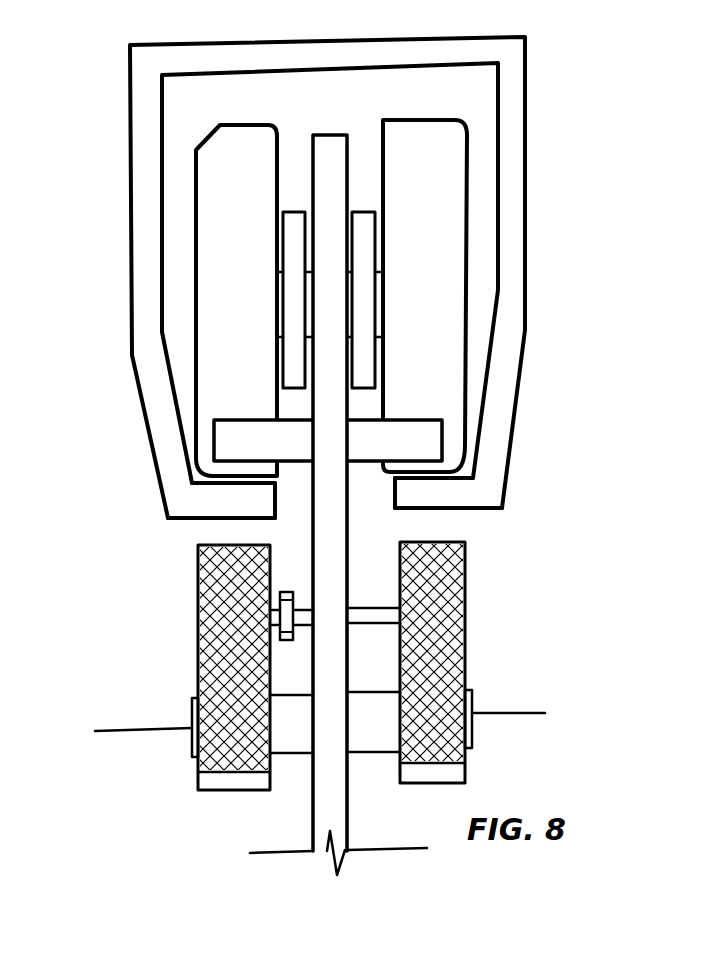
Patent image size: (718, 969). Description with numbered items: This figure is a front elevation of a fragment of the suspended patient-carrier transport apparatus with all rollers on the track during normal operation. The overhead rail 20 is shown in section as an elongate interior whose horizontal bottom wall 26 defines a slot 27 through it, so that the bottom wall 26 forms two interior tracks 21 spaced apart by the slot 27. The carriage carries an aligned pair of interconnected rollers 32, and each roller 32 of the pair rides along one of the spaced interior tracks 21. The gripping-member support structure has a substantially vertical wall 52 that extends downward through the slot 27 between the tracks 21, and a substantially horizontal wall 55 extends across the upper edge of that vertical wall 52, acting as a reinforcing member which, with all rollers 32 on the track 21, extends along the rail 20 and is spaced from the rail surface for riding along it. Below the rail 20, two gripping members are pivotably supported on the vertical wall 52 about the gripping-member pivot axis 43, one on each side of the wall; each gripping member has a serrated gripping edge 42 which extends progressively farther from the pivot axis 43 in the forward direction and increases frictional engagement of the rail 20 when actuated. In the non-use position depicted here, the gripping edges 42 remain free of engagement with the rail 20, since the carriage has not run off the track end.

The overhead rail 20 is at (513, 88).
The rollers 32 is at (445, 197).
The horizontal wall 55 is at (395, 433).
The horizontal track 21 is at (240, 473).
The horizontal bottom wall 26 is at (452, 492).
The slot 27 is at (360, 498).
The vertical wall 52 is at (327, 547).
The serrated gripping edge 42 is at (462, 600).
The gripping-member pivot axis 43 is at (483, 715).